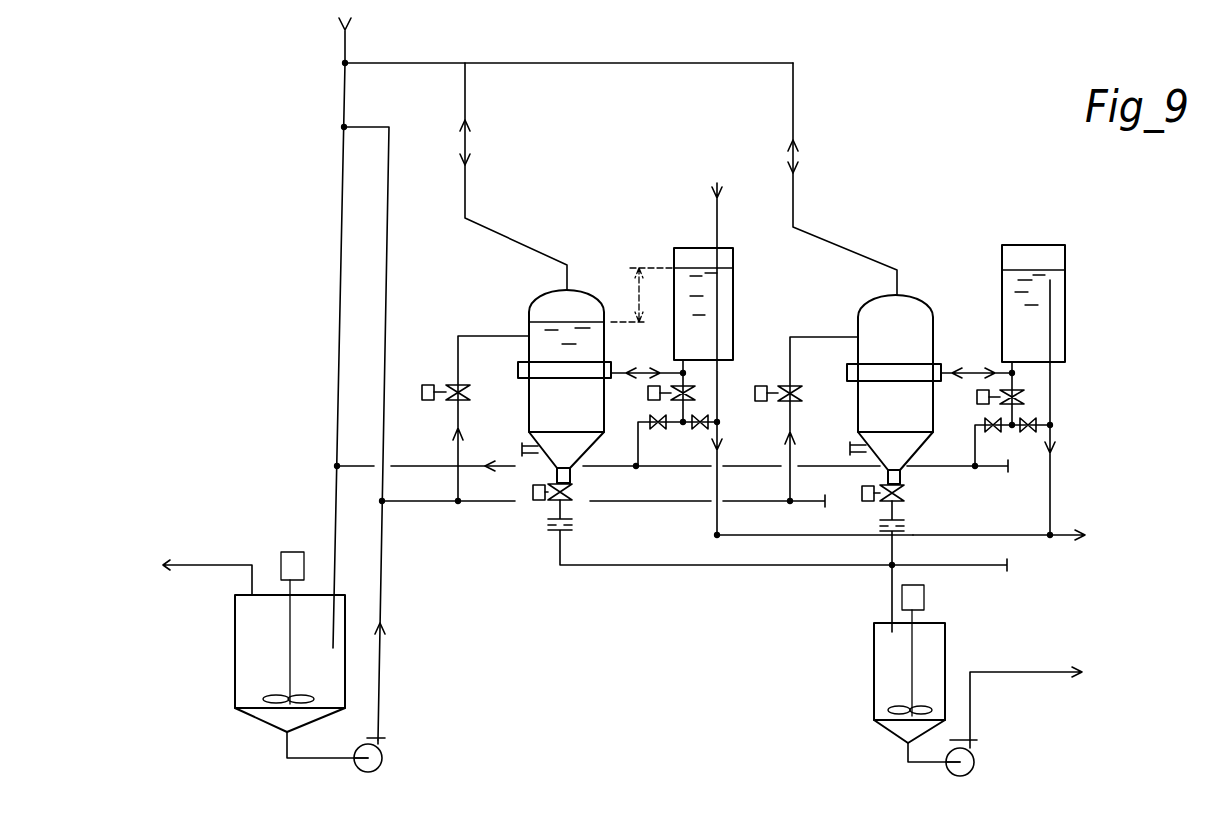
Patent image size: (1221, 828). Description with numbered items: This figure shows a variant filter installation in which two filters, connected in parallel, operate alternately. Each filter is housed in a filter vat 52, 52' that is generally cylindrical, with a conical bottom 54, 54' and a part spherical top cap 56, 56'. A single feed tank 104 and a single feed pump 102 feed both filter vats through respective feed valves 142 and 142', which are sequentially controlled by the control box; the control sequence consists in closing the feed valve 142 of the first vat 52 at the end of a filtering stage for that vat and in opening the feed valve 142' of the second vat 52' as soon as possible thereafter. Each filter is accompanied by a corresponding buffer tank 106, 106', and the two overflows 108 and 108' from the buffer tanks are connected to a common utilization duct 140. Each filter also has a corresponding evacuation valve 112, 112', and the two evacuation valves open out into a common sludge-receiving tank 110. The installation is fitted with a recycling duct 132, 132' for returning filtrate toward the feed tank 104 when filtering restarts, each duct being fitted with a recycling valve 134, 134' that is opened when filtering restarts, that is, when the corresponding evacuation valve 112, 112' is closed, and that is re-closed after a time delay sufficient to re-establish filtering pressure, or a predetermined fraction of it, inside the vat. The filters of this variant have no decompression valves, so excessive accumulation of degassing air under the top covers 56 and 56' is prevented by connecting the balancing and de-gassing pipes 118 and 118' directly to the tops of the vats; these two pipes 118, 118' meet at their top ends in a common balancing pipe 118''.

The common balancing pipe 118'' is at (569, 45).
The balancing and de-gassing pipe 118 is at (513, 176).
The balancing and de-gassing pipe 118' is at (842, 179).
The top cap 56 is at (546, 306).
The top cap 56' is at (871, 288).
The filter vat 52 is at (543, 386).
The filter vat 52' is at (876, 389).
The conical bottom 54 is at (514, 471).
The conical bottom 54' is at (846, 471).
The buffer tank 106 is at (689, 279).
The buffer tank 106' is at (1006, 300).
The overflow 108 is at (755, 271).
The overflow 108' is at (1097, 321).
The feed valve 142 is at (434, 367).
The feed valve 142' is at (771, 369).
The recycling valve 134 is at (650, 405).
The recycling valve 134' is at (978, 407).
The recycling duct 132 is at (654, 441).
The recycling duct 132' is at (988, 443).
The evacuation valve 112 is at (528, 514).
The evacuation valve 112' is at (860, 512).
The feed tank 104 is at (243, 676).
The feed pump 102 is at (382, 762).
The sludge-receiving tank 110 is at (880, 664).
The utilization duct 140 is at (1060, 537).